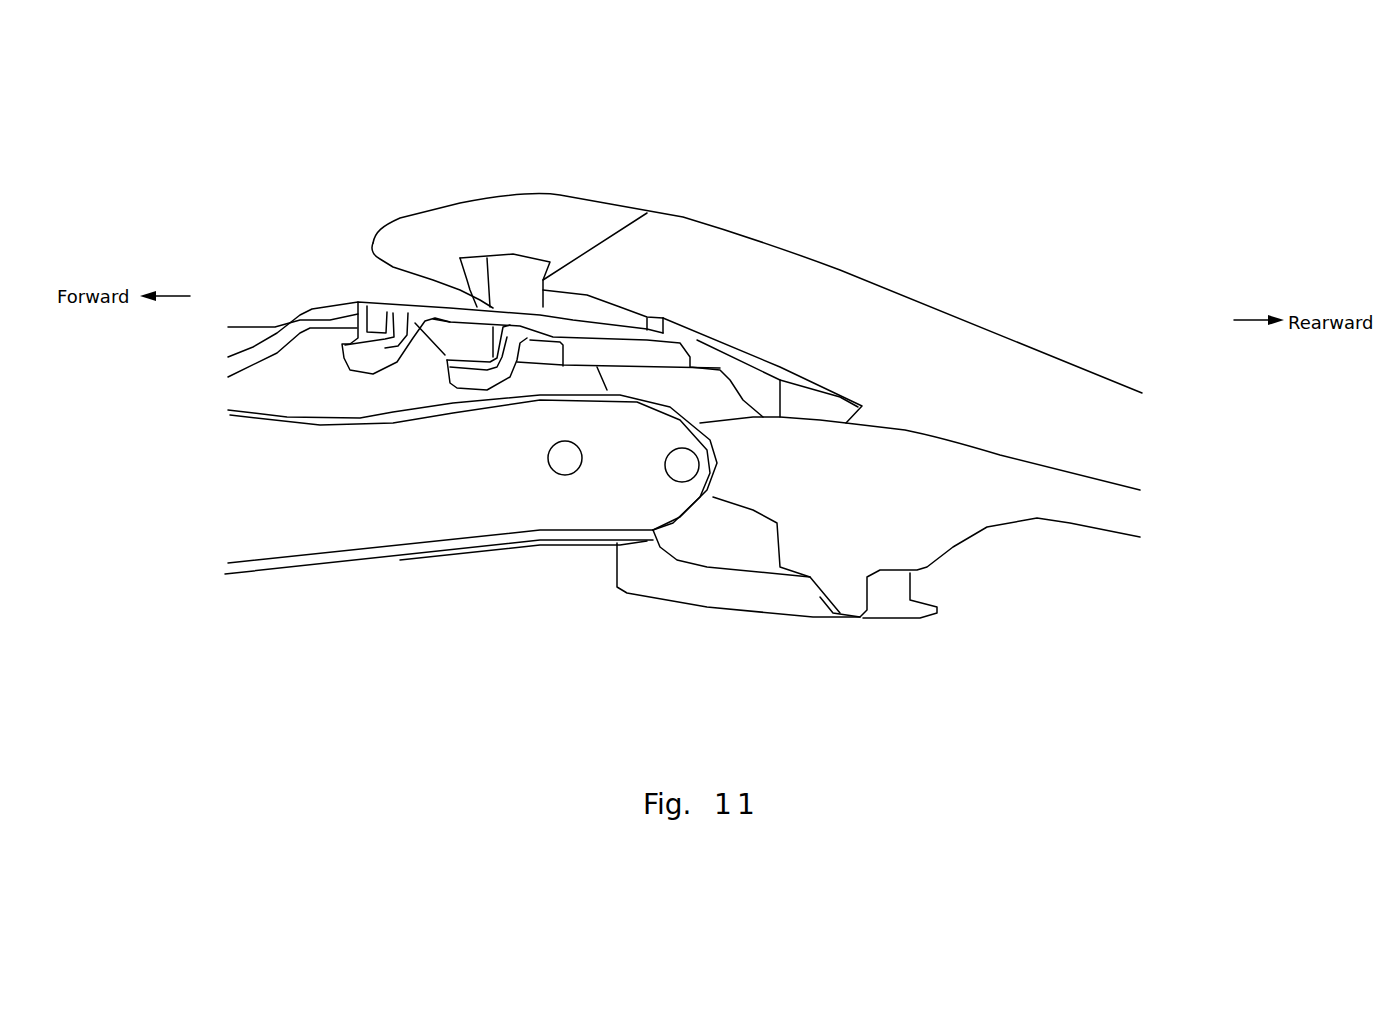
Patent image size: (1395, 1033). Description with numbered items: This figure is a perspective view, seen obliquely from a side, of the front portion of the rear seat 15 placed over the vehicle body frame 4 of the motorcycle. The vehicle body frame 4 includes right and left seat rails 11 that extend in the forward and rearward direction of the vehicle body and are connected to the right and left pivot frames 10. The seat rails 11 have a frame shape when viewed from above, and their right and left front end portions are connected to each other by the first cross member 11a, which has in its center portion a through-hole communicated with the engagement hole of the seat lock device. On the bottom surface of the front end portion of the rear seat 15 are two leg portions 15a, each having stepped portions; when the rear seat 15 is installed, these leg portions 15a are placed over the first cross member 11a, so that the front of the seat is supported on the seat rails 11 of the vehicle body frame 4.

The vehicle body frame 4 is at (623, 641).
The pivot frame 10 is at (343, 563).
The seat rail 11 is at (1073, 525).
The first cross member 11a is at (358, 299).
The rear seat 15 is at (905, 239).
The leg portion 15a is at (517, 270).